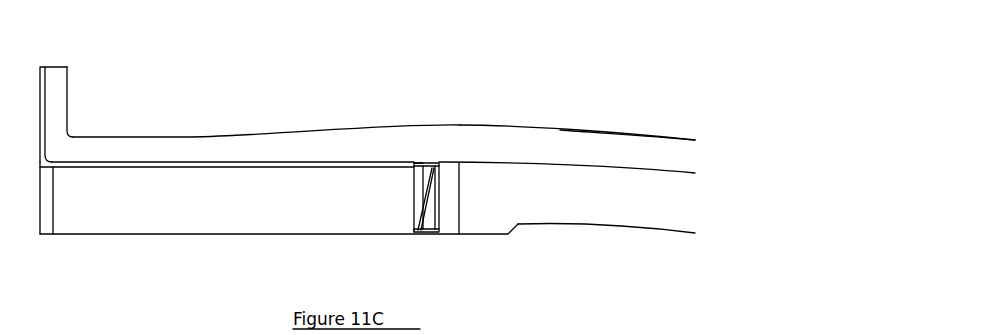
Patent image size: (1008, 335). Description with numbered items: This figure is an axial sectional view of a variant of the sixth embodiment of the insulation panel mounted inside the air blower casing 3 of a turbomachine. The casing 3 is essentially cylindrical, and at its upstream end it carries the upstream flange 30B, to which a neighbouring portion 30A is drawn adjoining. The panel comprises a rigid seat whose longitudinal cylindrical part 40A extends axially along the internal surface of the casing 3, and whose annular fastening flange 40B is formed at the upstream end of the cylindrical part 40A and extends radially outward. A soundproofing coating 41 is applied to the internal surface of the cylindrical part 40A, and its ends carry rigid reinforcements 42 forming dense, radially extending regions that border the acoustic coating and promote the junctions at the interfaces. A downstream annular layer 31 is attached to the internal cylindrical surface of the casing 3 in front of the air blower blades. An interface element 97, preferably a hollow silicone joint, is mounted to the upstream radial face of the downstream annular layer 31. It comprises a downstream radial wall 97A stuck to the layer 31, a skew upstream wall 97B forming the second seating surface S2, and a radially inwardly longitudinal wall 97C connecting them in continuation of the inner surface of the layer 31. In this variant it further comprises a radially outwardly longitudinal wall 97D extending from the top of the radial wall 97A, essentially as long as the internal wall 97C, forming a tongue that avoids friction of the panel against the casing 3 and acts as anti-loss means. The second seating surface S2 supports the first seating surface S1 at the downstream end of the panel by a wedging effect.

The air blower casing 3 is at (528, 129).
The downstream annular layer 31 is at (582, 177).
The horizontal portion of inner plate 30A is at (142, 148).
The upstream flange 30B is at (48, 97).
The longitudinal cylindrical part 40A is at (188, 168).
The annular fastening flange 40B is at (43, 112).
The soundproofing coating 41 is at (140, 202).
The rigid reinforcement 42 is at (50, 198).
The interface element 97 is at (428, 238).
The downstream radial wall 97A is at (440, 190).
The skew upstream wall 97B is at (428, 213).
The radially inwardly longitudinal wall 97C is at (425, 237).
The radially outwardly longitudinal wall 97D is at (421, 183).
The first seating surface S1 is at (430, 182).
The second seating surface S2 is at (420, 224).